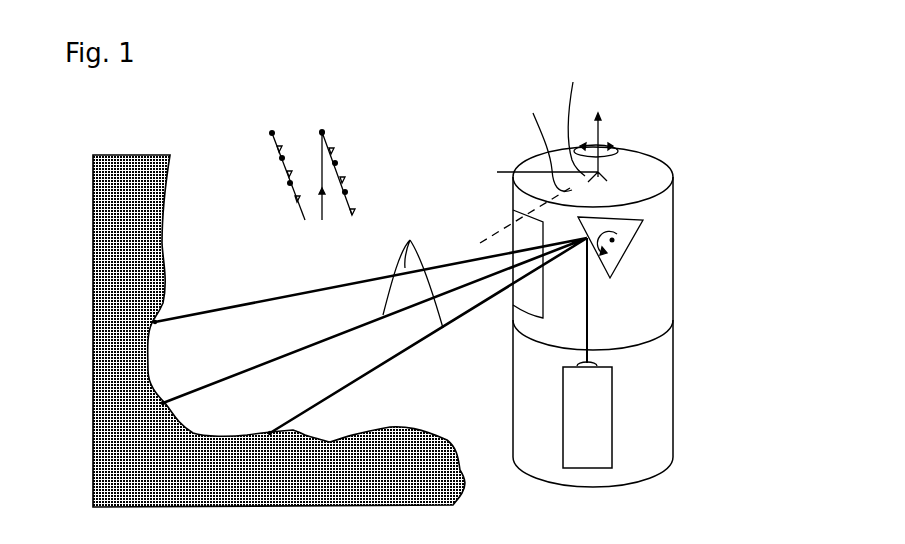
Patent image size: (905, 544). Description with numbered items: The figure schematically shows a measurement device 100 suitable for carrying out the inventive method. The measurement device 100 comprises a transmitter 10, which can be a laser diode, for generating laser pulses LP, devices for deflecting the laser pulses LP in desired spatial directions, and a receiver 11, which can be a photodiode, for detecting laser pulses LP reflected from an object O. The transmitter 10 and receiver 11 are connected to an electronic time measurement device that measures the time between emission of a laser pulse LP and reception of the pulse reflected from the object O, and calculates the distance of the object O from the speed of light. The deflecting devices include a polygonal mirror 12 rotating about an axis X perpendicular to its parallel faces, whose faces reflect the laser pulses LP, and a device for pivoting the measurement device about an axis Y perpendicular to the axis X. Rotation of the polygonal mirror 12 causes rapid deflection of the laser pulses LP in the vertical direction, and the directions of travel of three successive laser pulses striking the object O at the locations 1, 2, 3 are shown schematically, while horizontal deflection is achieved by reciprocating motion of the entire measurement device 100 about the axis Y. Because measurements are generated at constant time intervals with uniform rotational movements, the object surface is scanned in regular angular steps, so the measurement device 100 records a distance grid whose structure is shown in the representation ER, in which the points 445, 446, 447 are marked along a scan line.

The measurement device 100 is at (674, 82).
The receiver 11 is at (648, 355).
The transmitter 10 is at (588, 417).
The polygonal mirror 12 is at (623, 223).
The location 1 is at (215, 229).
The location 2 is at (223, 280).
The location 3 is at (281, 315).
The first stored point of the event record 445 is at (336, 138).
The second stored point of the event record 446 is at (347, 166).
The third stored point of the event record 447 is at (357, 193).
The object O is at (137, 165).
The representation of the distance grid ER is at (390, 163).
The laser pulses LP is at (413, 272).
The axis X is at (614, 239).
The axis Y is at (600, 118).